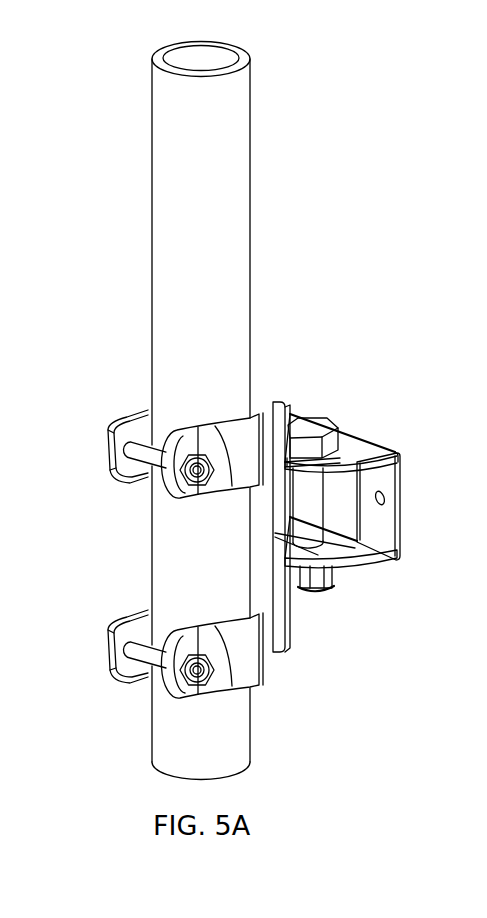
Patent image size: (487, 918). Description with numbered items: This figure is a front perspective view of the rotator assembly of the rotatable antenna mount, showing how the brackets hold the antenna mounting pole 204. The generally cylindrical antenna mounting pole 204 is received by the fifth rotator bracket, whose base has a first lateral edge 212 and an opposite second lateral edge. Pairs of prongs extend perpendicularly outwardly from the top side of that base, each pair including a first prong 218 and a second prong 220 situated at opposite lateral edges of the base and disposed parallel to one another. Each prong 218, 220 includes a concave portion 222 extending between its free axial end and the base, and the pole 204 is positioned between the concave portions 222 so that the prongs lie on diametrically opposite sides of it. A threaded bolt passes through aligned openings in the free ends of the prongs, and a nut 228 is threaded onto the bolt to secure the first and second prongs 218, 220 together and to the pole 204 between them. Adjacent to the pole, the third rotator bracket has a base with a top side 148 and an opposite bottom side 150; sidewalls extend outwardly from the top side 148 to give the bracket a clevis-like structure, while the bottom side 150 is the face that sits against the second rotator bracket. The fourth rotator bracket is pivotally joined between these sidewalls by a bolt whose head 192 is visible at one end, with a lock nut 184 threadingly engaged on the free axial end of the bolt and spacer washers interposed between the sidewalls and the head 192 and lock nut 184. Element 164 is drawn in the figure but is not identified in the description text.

The top side 148 is at (388, 522).
The bottom side 150 is at (403, 465).
The bracket bottom plate 164 is at (358, 527).
The lock nut 184 is at (323, 589).
The head 192 is at (312, 423).
The antenna mounting pole 204 is at (218, 757).
The first lateral edge 212 is at (302, 590).
The first prong 218 is at (128, 435).
The second prong 220 is at (228, 442).
The concave portion 222 is at (247, 662).
The nut 228 is at (173, 698).